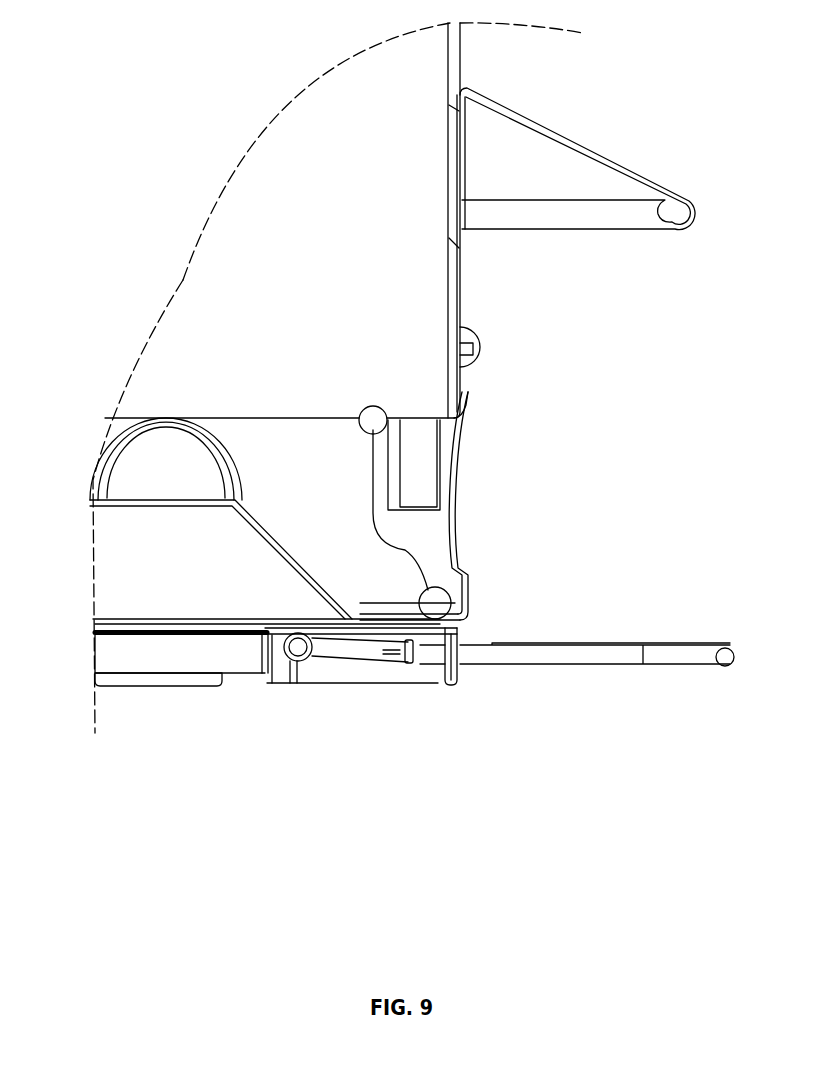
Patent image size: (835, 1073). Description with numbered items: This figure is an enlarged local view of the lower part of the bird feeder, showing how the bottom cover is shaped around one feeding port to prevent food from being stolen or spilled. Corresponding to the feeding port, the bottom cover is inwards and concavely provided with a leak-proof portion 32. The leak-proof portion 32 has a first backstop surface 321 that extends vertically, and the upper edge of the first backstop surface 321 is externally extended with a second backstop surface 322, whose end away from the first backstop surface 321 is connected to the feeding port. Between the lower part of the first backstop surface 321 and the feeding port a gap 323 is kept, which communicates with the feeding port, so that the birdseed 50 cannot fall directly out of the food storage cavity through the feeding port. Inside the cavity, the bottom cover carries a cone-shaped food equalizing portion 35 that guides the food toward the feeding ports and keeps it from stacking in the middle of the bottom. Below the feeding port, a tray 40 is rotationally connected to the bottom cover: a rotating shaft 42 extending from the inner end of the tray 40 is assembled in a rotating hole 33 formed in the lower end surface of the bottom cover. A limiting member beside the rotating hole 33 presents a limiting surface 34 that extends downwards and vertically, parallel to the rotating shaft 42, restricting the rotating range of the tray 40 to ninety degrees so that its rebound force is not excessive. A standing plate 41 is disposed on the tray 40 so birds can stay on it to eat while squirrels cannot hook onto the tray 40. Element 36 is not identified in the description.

The leak-proof portion 32 is at (575, 458).
The first backstop surface 321 is at (392, 479).
The second backstop surface 322 is at (420, 420).
The gap 323 is at (430, 553).
The rotating hole 33 is at (310, 657).
The limiting surface 34 is at (273, 683).
The food equalizing portion 35 is at (272, 543).
The hook bracket 36 is at (423, 663).
The tray 40 is at (603, 657).
The standing plate 41 is at (668, 645).
The rotating shaft 42 is at (293, 663).
The birdseed 50 is at (385, 410).